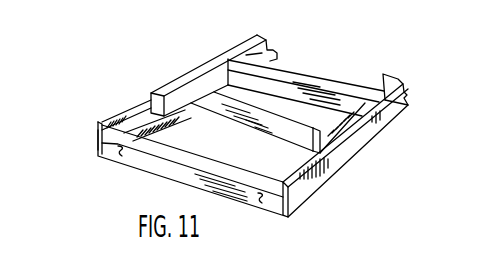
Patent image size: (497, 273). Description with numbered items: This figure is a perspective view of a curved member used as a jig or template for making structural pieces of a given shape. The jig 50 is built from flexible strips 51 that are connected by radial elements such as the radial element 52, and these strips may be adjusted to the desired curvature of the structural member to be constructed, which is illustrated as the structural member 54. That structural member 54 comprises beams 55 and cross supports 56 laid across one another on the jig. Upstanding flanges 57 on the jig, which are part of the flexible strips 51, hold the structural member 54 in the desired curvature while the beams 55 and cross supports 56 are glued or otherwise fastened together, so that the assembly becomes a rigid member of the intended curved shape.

The jig 50 is at (92, 117).
The flexible strips 51 is at (133, 129).
The radial elements 52 is at (143, 160).
The structural member 54 is at (182, 67).
The beams 55 is at (245, 49).
The cross supports 56 is at (307, 77).
The upstanding flanges 57 is at (147, 112).